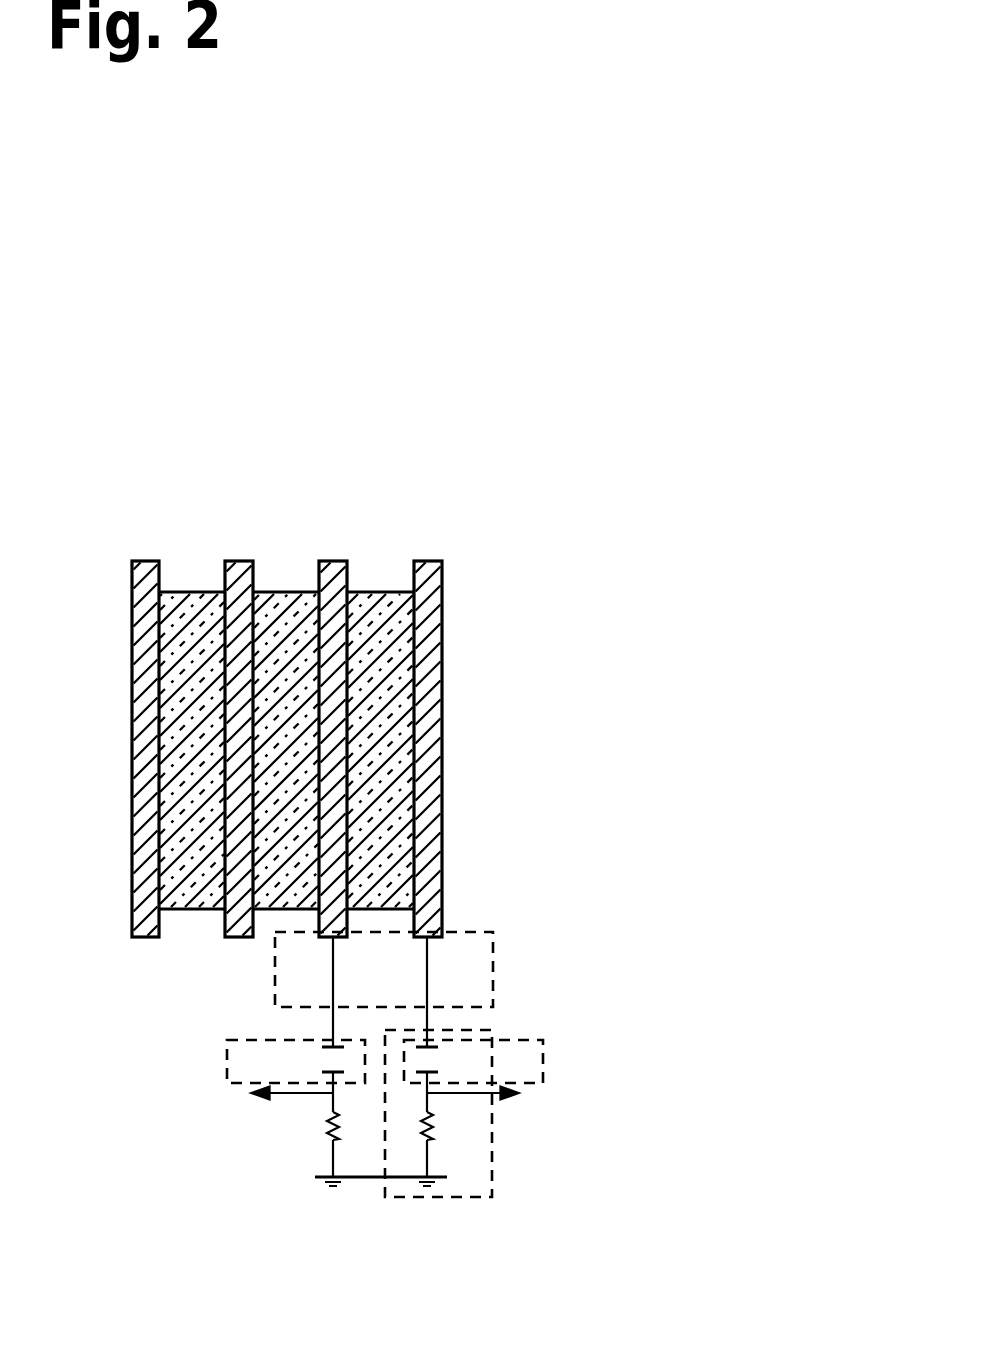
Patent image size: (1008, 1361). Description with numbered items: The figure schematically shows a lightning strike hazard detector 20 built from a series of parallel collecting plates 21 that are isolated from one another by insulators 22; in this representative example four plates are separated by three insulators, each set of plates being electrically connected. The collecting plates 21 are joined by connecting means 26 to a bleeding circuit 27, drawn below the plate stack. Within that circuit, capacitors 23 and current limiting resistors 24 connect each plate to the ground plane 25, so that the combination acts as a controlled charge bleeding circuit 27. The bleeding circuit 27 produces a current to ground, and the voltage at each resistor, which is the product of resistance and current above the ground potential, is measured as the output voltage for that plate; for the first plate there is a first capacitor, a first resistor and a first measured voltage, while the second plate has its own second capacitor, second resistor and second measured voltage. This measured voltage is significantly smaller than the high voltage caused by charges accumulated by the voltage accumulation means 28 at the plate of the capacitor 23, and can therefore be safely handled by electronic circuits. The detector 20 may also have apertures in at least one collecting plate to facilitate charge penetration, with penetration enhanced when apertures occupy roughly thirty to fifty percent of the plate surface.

The lightning strike hazard detector 20 is at (547, 338).
The collecting plates 21 is at (233, 562).
The insulators 22 is at (363, 592).
The capacitors 23 is at (277, 1063).
The current limiting resistors 24 is at (272, 1130).
The ground plane 25 is at (365, 1180).
The connecting means 26 is at (455, 932).
The bleeding circuit 27 is at (490, 1197).
The voltage accumulation means 28 is at (226, 1082).